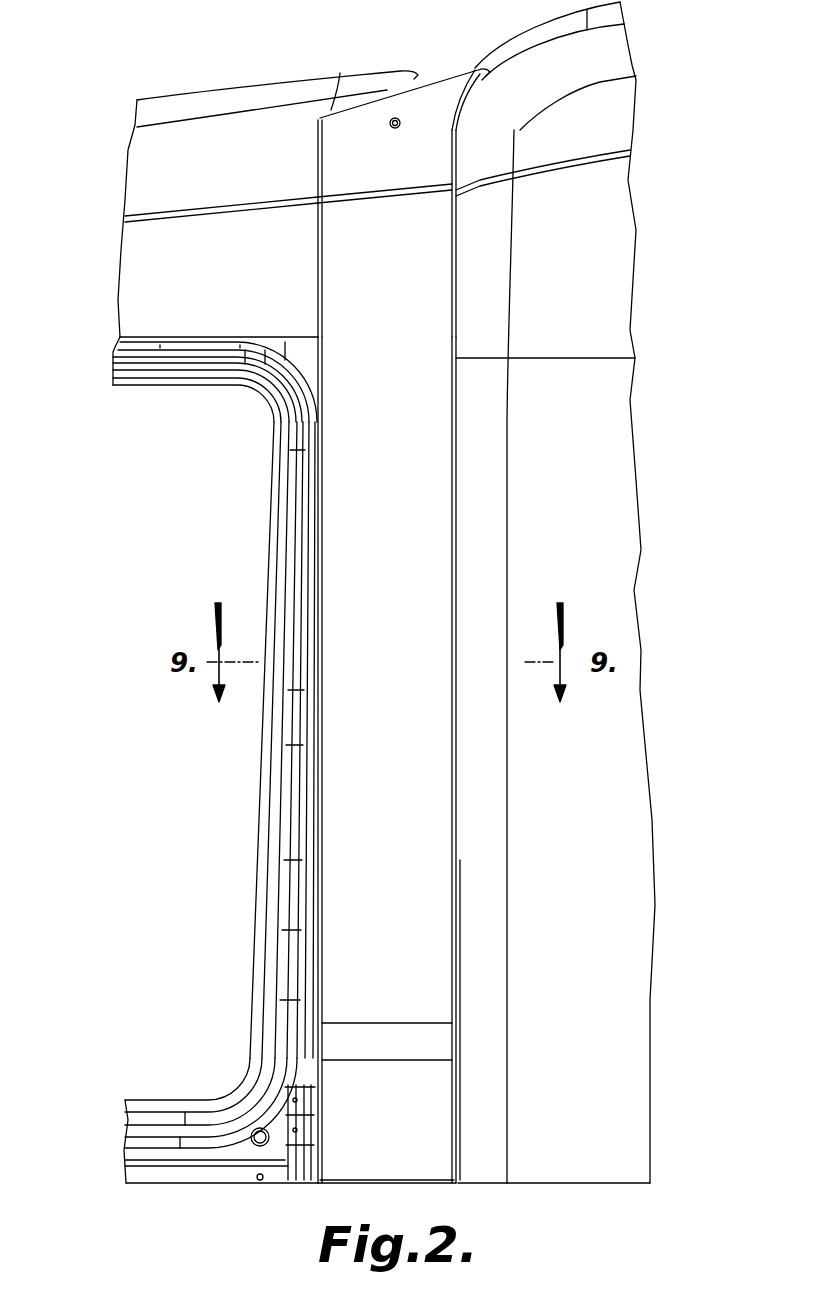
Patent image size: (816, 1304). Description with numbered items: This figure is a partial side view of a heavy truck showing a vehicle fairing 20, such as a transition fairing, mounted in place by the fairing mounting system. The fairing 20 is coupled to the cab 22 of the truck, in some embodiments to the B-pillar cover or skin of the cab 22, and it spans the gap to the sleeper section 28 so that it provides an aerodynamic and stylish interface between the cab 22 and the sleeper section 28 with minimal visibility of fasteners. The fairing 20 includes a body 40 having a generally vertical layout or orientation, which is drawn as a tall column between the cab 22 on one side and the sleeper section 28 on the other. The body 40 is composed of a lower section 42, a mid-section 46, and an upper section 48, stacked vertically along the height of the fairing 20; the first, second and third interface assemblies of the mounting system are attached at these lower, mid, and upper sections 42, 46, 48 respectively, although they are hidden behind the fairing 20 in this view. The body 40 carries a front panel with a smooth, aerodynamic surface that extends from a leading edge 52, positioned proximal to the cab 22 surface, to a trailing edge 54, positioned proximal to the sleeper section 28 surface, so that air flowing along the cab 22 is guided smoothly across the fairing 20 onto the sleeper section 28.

The vehicle fairing 20 is at (455, 455).
The cab 22 is at (120, 318).
The sleeper section 28 is at (627, 540).
The body 40 is at (332, 522).
The lower section 42 is at (435, 1107).
The mid-section 46 is at (423, 723).
The upper section 48 is at (448, 253).
The leading edge 52 is at (318, 253).
The trailing edge 54 is at (455, 855).